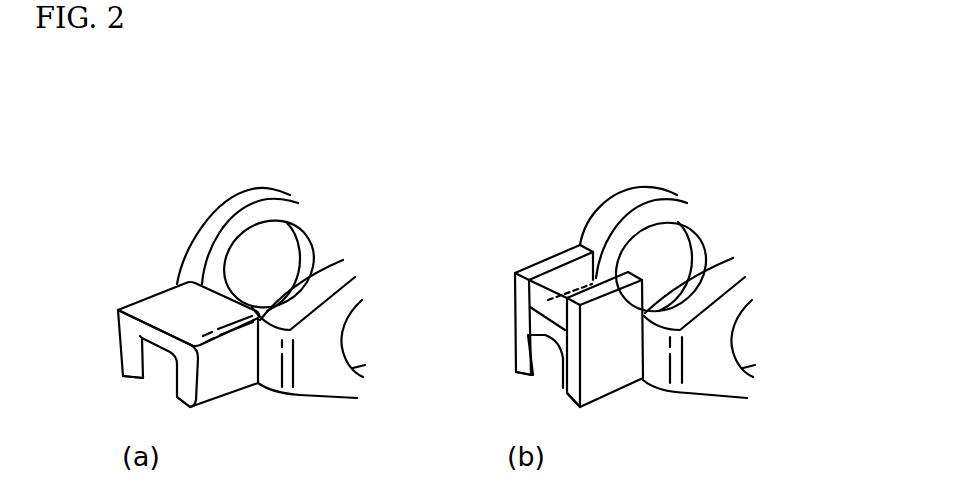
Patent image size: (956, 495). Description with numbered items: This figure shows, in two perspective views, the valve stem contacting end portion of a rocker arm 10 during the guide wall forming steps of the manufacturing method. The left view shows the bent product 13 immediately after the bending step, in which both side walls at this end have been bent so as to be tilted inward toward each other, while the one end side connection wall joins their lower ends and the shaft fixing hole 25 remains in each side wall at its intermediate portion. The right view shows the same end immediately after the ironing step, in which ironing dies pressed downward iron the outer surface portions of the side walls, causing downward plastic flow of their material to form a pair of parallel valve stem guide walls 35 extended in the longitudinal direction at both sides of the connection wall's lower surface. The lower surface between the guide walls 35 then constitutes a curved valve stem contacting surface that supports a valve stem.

The rocker arm 10 is at (650, 287).
The bent product 13 is at (220, 278).
The shaft fixing hole 25 is at (280, 243).
The valve stem guide wall 35 is at (550, 262).